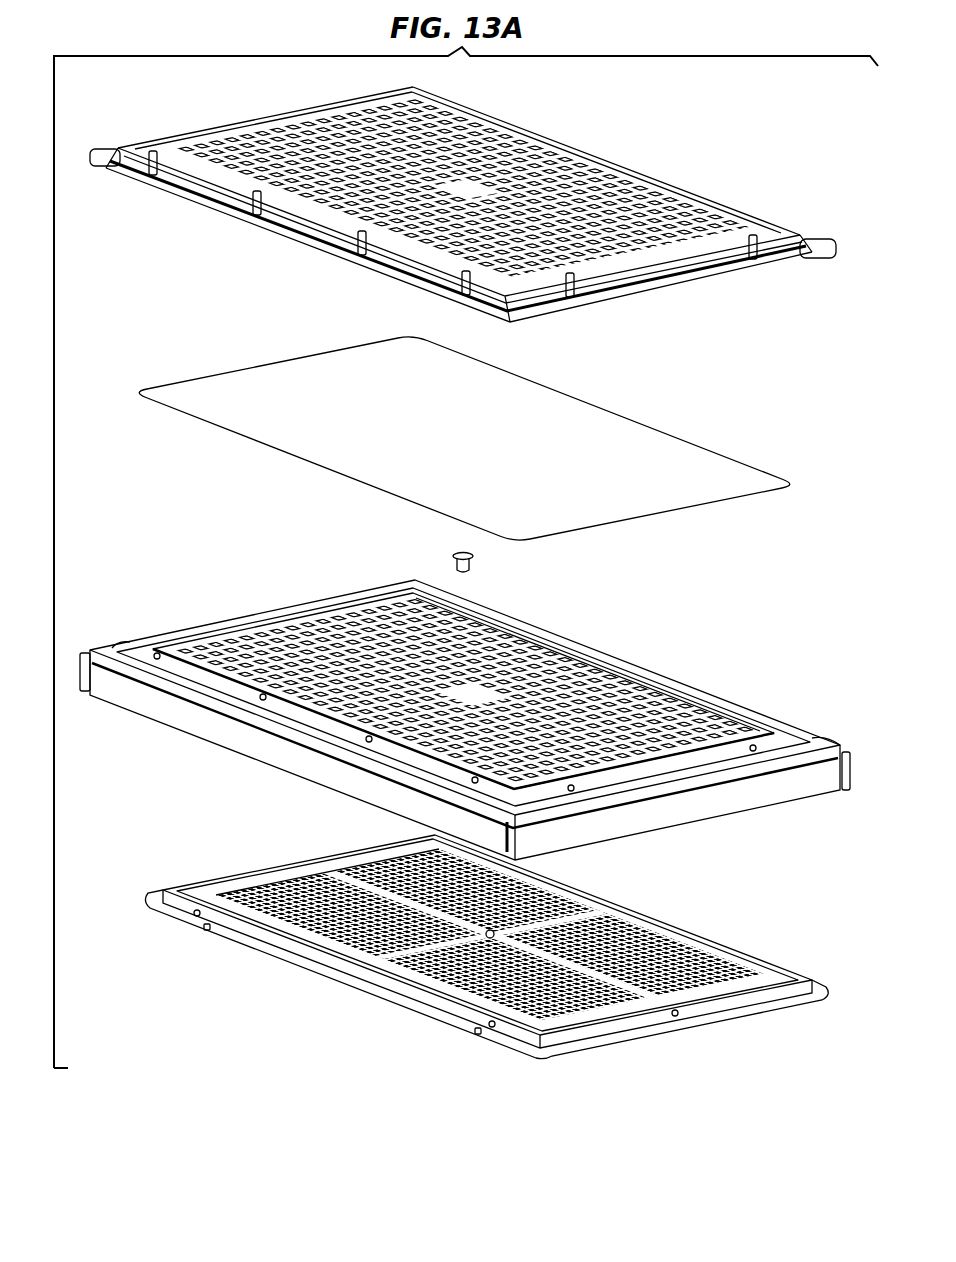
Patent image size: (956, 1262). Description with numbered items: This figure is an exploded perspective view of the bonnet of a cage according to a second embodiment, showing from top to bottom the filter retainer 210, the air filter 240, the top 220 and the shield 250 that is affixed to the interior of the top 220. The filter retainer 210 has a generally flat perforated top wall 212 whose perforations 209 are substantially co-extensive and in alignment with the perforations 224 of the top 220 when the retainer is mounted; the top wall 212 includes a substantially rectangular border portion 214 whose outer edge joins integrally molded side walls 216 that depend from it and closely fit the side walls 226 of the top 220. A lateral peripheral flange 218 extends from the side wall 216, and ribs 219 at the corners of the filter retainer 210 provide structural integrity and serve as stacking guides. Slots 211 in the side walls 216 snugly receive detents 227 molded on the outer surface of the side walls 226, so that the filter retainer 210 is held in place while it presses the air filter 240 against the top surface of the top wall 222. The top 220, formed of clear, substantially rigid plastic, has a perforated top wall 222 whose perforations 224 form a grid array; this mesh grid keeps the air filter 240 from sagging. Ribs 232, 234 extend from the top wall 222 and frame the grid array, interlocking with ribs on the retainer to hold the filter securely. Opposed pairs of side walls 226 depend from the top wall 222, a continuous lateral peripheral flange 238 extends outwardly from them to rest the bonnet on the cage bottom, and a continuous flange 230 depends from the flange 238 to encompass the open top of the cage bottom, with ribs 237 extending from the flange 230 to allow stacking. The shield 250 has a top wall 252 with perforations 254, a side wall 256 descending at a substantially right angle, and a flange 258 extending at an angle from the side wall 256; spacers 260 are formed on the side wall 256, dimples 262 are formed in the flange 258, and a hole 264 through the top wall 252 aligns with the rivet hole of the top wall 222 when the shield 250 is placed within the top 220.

The perforations 209 is at (505, 135).
The filter retainer 210 is at (471, 224).
The slots 211 is at (362, 252).
The top wall 212 is at (590, 160).
The border portion 214 is at (770, 225).
The side walls 216 is at (705, 280).
The lateral peripheral flange 218 is at (103, 168).
The ribs 219 is at (100, 152).
The top 220 is at (478, 722).
The top wall 222 is at (742, 706).
The perforations 224 is at (672, 690).
The side walls 226 is at (680, 795).
The detents 227 is at (160, 665).
The flange 230 is at (262, 748).
The rib 232 is at (165, 640).
The rib 234 is at (225, 632).
The ribs 237 is at (848, 778).
The lateral peripheral flange 238 is at (472, 567).
The air filter 240 is at (486, 452).
The shield 250 is at (479, 969).
The top wall 252 is at (630, 915).
The perforations 254 is at (240, 876).
The side wall 256 is at (318, 995).
The flange 258 is at (785, 1000).
The spacers 260 is at (195, 915).
The dimples 262 is at (206, 930).
The hole 264 is at (494, 930).